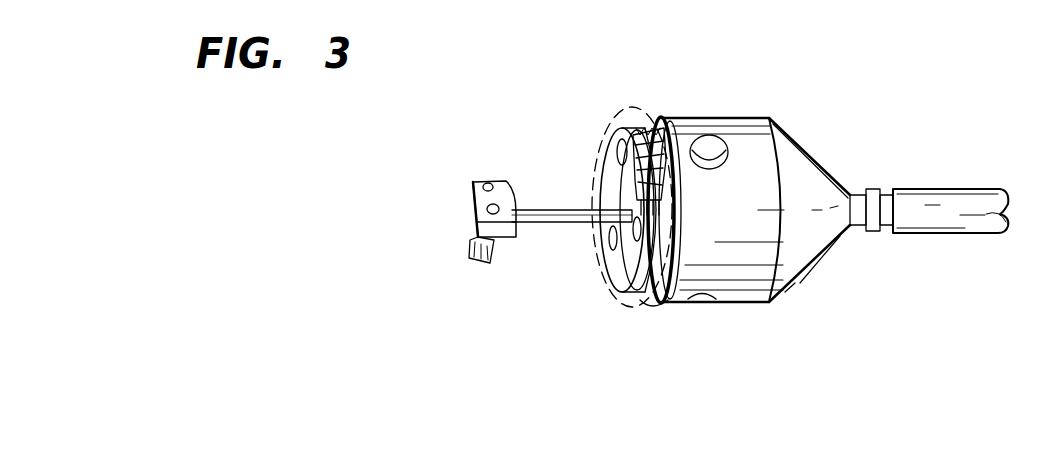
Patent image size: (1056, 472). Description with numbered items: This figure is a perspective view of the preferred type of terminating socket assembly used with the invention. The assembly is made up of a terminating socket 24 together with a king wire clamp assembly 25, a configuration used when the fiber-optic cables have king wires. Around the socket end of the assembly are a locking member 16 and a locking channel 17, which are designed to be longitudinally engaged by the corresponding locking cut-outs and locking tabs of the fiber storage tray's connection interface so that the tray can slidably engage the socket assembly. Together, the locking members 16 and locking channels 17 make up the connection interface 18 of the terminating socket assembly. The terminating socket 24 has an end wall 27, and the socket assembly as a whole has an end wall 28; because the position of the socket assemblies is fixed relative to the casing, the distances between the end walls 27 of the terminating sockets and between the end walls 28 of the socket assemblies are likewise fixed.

The locking member 16 is at (624, 287).
The locking channel 17 is at (652, 192).
The connection interface 18 is at (632, 310).
The terminating socket 24 is at (855, 97).
The king wire clamp assembly 25 is at (660, 97).
The end wall 27 is at (650, 300).
The end wall 28 is at (612, 188).